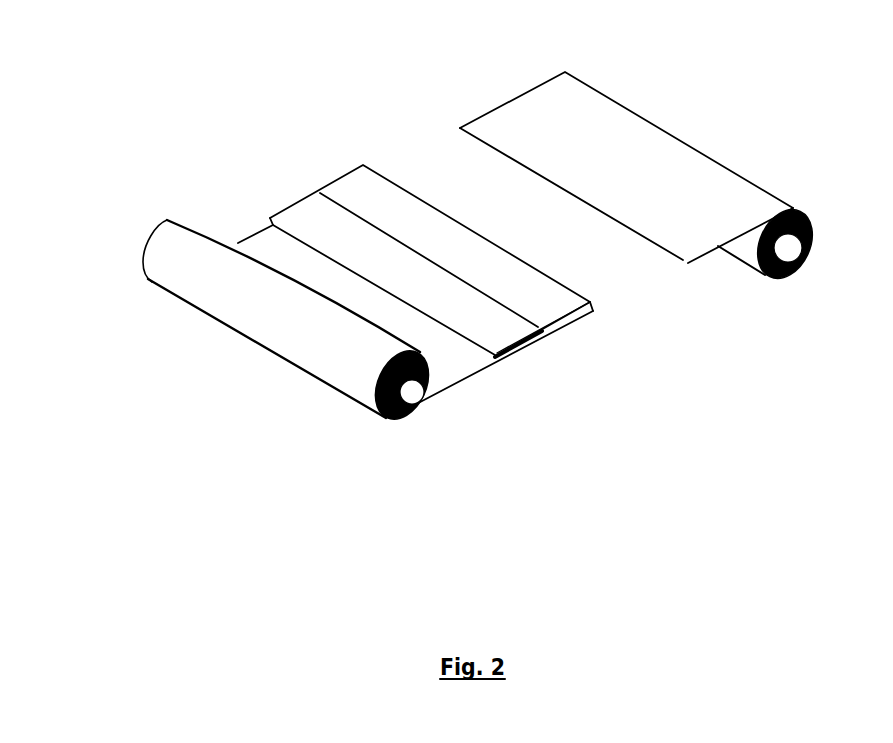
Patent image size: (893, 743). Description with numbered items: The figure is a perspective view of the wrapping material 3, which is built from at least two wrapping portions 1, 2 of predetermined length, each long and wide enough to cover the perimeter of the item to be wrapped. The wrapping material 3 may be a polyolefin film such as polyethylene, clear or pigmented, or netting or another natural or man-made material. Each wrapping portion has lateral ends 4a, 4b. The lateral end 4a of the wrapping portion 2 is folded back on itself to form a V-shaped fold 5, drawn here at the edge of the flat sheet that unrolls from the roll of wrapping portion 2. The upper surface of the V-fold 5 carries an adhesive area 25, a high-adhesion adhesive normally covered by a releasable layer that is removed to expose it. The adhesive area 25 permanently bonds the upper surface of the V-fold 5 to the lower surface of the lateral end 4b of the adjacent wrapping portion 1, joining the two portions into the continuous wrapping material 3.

The wrapping portion 1 is at (488, 110).
The wrapping portion 2 is at (320, 192).
The wrapping material 3 is at (248, 372).
The lateral end 4a is at (542, 328).
The lateral end 4b is at (690, 262).
The V-shaped fold 5 is at (593, 313).
The adhesive area 25 is at (433, 307).